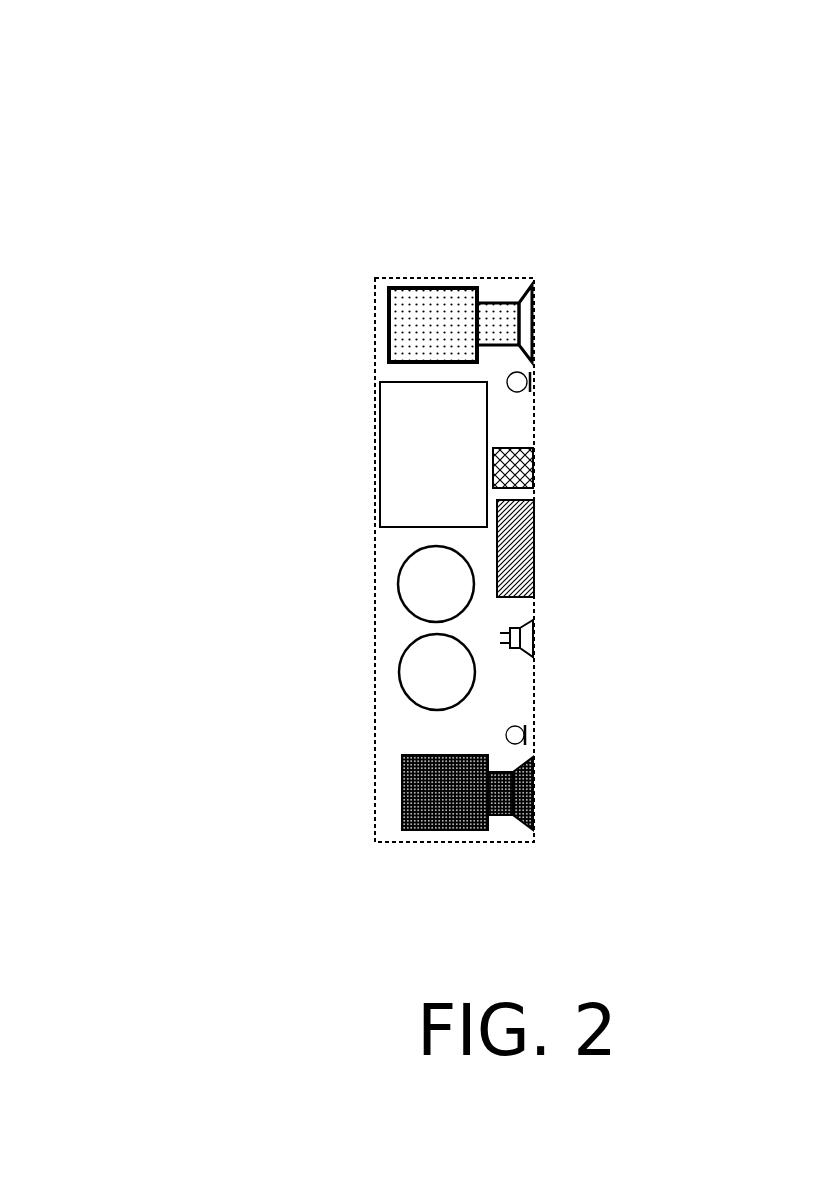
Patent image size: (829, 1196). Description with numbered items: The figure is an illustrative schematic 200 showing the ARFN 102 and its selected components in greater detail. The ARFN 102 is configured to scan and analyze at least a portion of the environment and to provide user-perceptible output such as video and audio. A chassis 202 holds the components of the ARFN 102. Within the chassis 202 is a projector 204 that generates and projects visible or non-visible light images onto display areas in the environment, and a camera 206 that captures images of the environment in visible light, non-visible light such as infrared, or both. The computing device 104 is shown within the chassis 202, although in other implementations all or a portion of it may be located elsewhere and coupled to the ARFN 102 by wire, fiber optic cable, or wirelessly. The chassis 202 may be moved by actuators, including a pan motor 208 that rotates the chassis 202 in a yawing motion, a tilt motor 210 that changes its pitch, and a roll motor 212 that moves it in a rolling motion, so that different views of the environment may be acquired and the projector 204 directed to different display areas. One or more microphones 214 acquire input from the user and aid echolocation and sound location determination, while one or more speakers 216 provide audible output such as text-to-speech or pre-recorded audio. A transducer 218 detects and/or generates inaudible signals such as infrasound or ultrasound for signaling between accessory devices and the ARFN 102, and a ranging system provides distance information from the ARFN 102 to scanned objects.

The illustrative schematic 200 is at (620, 87).
The ARFN 102 is at (406, 270).
The chassis 202 is at (455, 278).
The projector 204 is at (433, 324).
The computing device 104 is at (433, 454).
The roll motor 212 is at (522, 375).
The speakers 216 is at (528, 450).
The transducer 218 is at (522, 547).
The pan motor 208 is at (413, 596).
The tilt motor 210 is at (405, 670).
The microphones 214 is at (534, 638).
The camera 206 is at (402, 829).